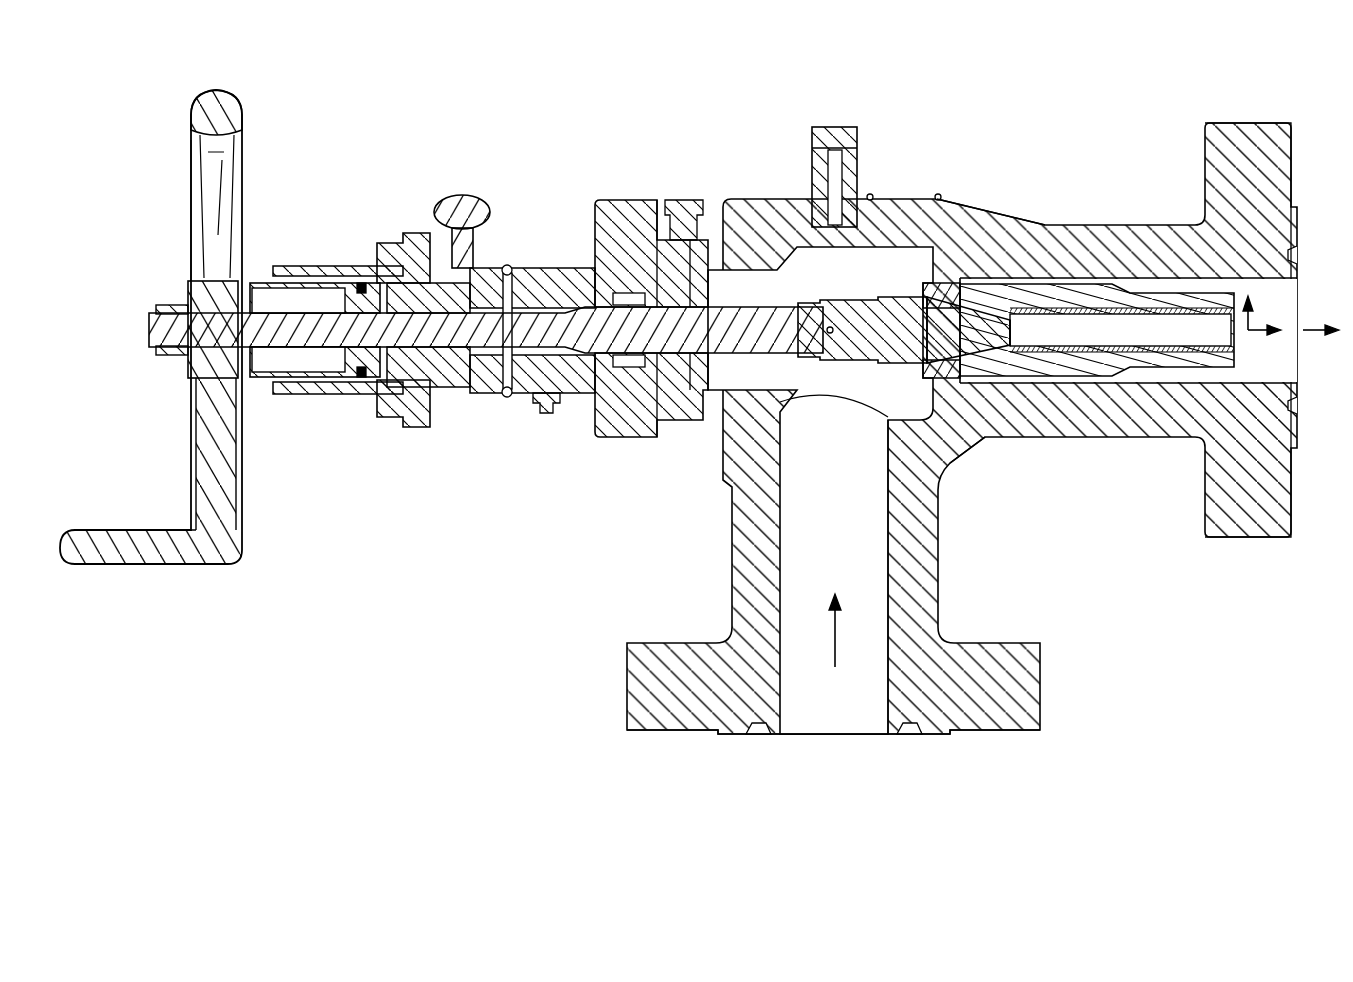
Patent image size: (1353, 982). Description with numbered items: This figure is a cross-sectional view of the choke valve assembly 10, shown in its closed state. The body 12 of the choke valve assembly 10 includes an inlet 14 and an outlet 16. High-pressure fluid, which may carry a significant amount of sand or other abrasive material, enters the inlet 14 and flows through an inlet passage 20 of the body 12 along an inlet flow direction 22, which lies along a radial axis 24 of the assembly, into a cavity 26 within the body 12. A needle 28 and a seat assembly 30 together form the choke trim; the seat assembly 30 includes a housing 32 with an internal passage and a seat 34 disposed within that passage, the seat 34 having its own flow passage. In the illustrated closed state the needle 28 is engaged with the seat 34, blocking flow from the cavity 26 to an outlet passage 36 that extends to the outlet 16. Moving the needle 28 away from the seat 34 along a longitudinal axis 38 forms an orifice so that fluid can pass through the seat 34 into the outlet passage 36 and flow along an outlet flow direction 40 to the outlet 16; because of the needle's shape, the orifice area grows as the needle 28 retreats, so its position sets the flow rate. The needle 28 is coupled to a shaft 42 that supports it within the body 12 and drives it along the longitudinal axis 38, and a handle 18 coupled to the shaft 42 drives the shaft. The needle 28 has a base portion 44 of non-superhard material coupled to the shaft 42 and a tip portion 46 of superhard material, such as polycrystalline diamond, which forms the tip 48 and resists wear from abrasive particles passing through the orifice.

The choke valve assembly 10 is at (942, 92).
The body 12 is at (773, 210).
The inlet 14 is at (854, 747).
The outlet 16 is at (1290, 289).
The handle 18 is at (220, 488).
The inlet passage 20 is at (885, 572).
The inlet flow direction 22 is at (833, 660).
The radial axis 24 is at (1252, 322).
The cavity 26 is at (858, 268).
The needle 28 is at (884, 386).
The seat assembly 30 is at (988, 263).
The housing 32 is at (1050, 297).
The seat 34 is at (953, 305).
The outlet passage 36 is at (1150, 283).
The longitudinal axis 38 is at (1257, 332).
The outlet flow direction 40 is at (1312, 326).
The shaft 42 is at (733, 327).
The base portion 44 is at (893, 312).
The tip portion 46 is at (927, 343).
The tip 48 is at (1012, 330).